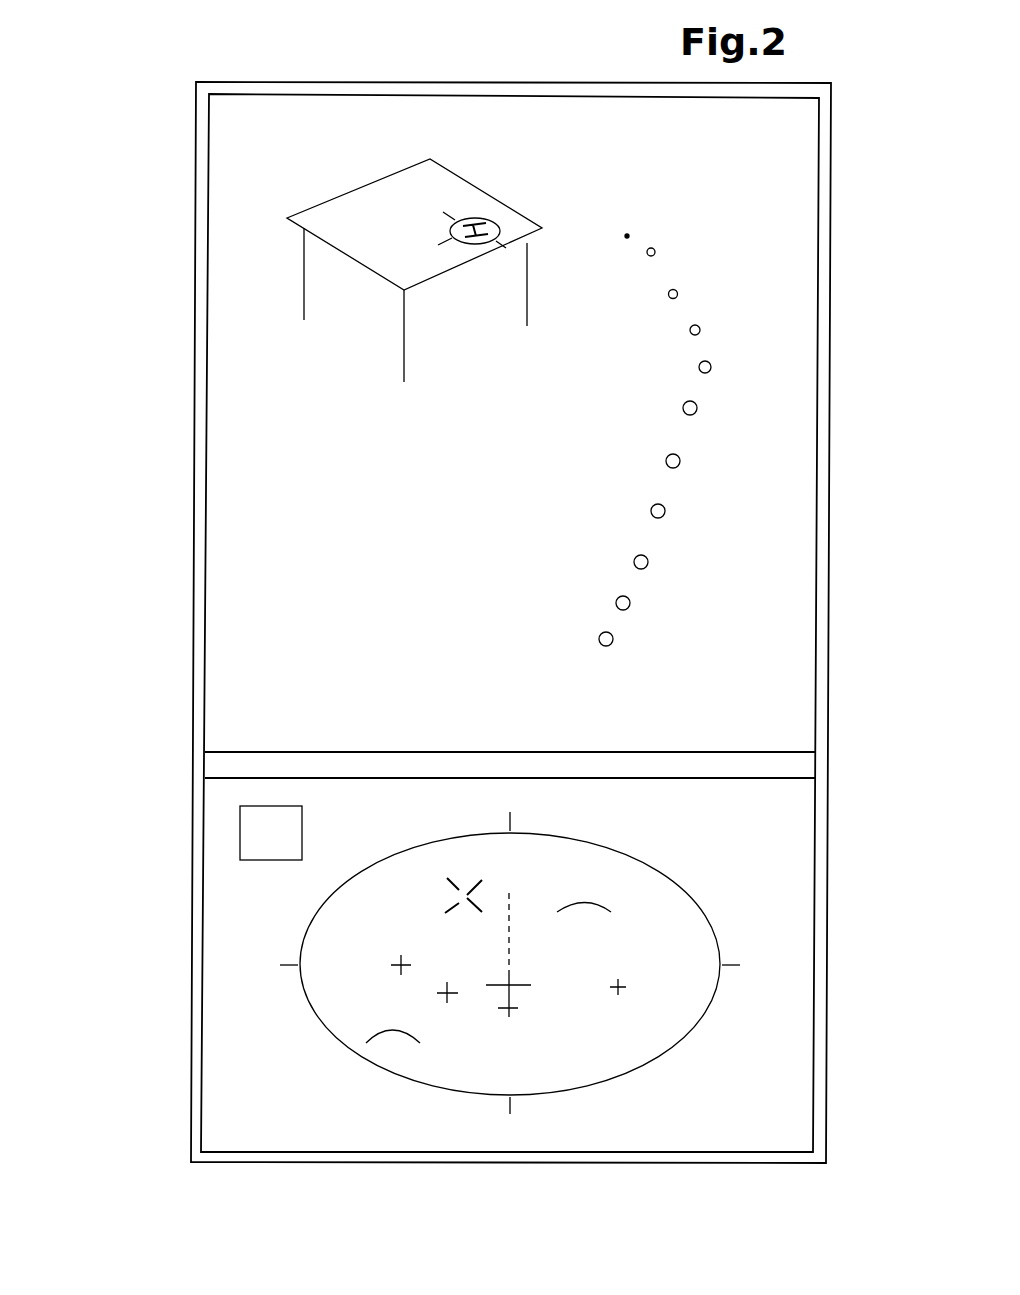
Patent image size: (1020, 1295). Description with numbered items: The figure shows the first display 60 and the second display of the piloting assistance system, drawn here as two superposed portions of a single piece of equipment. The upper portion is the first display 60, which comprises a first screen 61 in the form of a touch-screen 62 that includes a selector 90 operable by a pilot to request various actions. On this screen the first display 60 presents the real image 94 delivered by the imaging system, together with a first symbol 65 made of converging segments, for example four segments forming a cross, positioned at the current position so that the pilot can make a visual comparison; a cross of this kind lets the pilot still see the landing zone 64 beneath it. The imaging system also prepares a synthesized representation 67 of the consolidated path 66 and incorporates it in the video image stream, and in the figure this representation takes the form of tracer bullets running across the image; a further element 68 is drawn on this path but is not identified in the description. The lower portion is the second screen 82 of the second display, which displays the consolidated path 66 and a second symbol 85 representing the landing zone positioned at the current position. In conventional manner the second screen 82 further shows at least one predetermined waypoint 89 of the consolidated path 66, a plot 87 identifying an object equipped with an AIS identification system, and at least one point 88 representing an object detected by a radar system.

The first display 60 is at (168, 594).
The first screen 61 is at (785, 735).
The touch-screen 62 is at (445, 249).
The landing zone 64 is at (497, 193).
The real image 94 is at (472, 217).
The first symbol 65 is at (530, 207).
The consolidated path 66 is at (632, 604).
The synthesized representation 67 is at (660, 563).
The current position marker 68 is at (613, 640).
The second screen 82 is at (510, 962).
The second symbol 85 is at (444, 894).
The plot 87 is at (400, 964).
The point 88 is at (395, 1032).
The predetermined waypoint 89 is at (512, 945).
The selector 90 is at (257, 850).